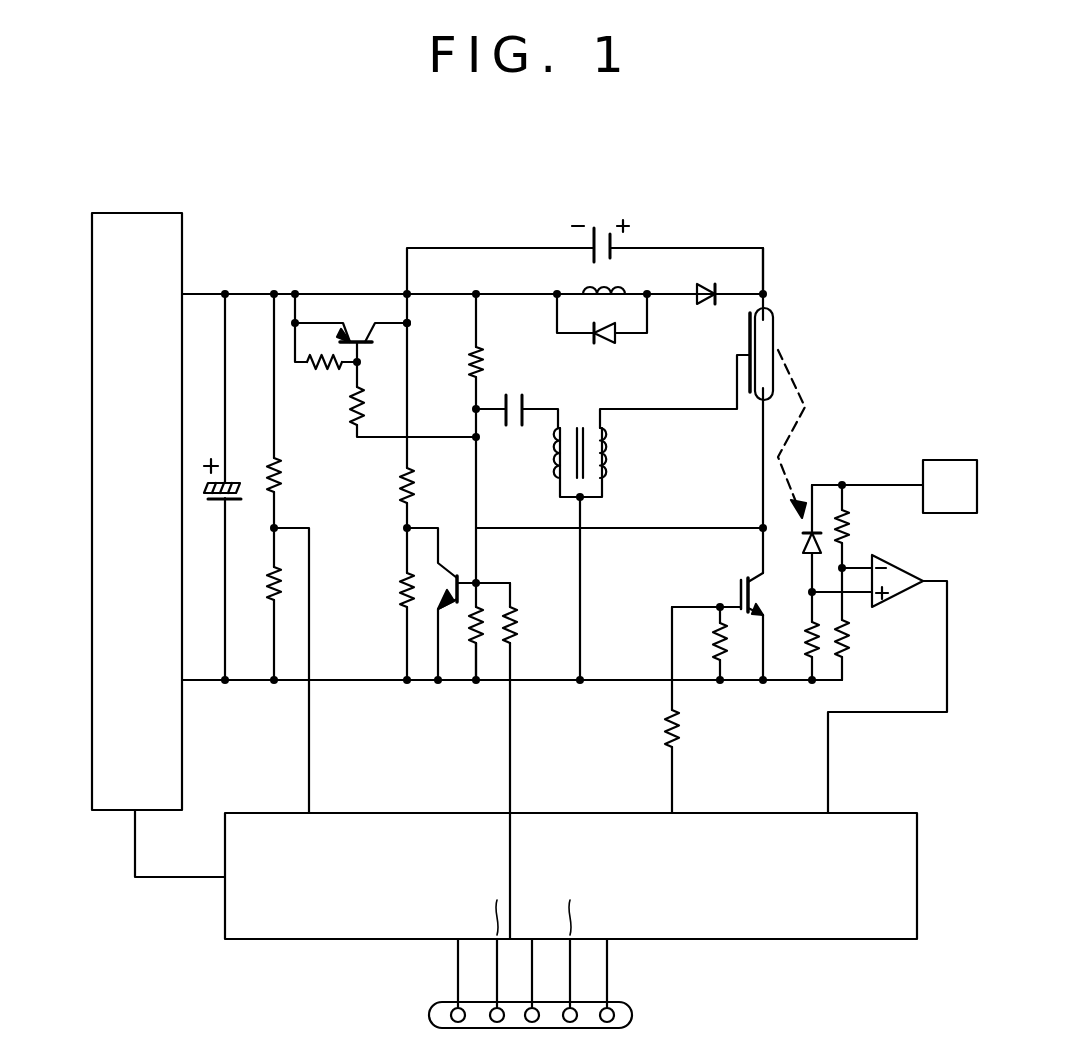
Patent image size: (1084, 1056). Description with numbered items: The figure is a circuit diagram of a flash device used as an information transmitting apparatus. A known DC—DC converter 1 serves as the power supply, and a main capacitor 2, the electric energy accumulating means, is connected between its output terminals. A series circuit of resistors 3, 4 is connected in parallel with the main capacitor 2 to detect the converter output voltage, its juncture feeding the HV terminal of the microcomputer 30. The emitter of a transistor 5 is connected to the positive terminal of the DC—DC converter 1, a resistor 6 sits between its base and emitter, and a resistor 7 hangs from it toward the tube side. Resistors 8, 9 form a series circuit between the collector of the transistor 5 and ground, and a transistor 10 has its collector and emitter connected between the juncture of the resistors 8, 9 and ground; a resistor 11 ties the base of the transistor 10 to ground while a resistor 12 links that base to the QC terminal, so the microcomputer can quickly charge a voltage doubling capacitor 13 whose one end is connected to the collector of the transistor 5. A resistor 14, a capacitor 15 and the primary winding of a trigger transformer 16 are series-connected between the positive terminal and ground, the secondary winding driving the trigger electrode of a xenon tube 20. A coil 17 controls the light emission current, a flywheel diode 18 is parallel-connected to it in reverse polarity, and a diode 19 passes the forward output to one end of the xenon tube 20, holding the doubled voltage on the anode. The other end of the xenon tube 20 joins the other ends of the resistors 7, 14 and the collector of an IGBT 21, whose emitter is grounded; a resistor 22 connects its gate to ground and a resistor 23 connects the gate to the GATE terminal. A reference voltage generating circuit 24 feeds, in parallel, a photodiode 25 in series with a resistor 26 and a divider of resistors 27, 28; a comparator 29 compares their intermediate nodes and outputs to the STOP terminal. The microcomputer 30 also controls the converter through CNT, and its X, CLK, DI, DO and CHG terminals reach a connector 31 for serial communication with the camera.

The DC—DC converter 1 is at (158, 213).
The main capacitor 2 is at (238, 483).
The resistor 3 is at (290, 480).
The resistor 4 is at (266, 585).
The transistor 5 is at (350, 322).
The resistor 6 is at (325, 375).
The resistor 7 is at (371, 400).
The resistor 8 is at (395, 487).
The resistor 9 is at (395, 590).
The transistor 10 is at (462, 570).
The resistor 11 is at (470, 648).
The resistor 12 is at (520, 623).
The voltage doubling capacitor 13 is at (605, 233).
The resistor 14 is at (470, 352).
The capacitor 15 is at (515, 392).
The trigger transformer 16 is at (612, 455).
The coil 17 is at (627, 285).
The diode 18 is at (610, 340).
The diode 19 is at (708, 305).
The xenon tube 20 is at (773, 330).
The IGBT 21 is at (735, 585).
The resistor 22 is at (705, 645).
The resistor 23 is at (660, 740).
The reference voltage generating circuit 24 is at (950, 465).
The photodiode 25 is at (800, 543).
The resistor 26 is at (798, 660).
The resistor 27 is at (852, 535).
The resistor 28 is at (855, 648).
The comparator 29 is at (905, 565).
The microcomputer 30 is at (300, 939).
The connector 31 is at (638, 1012).